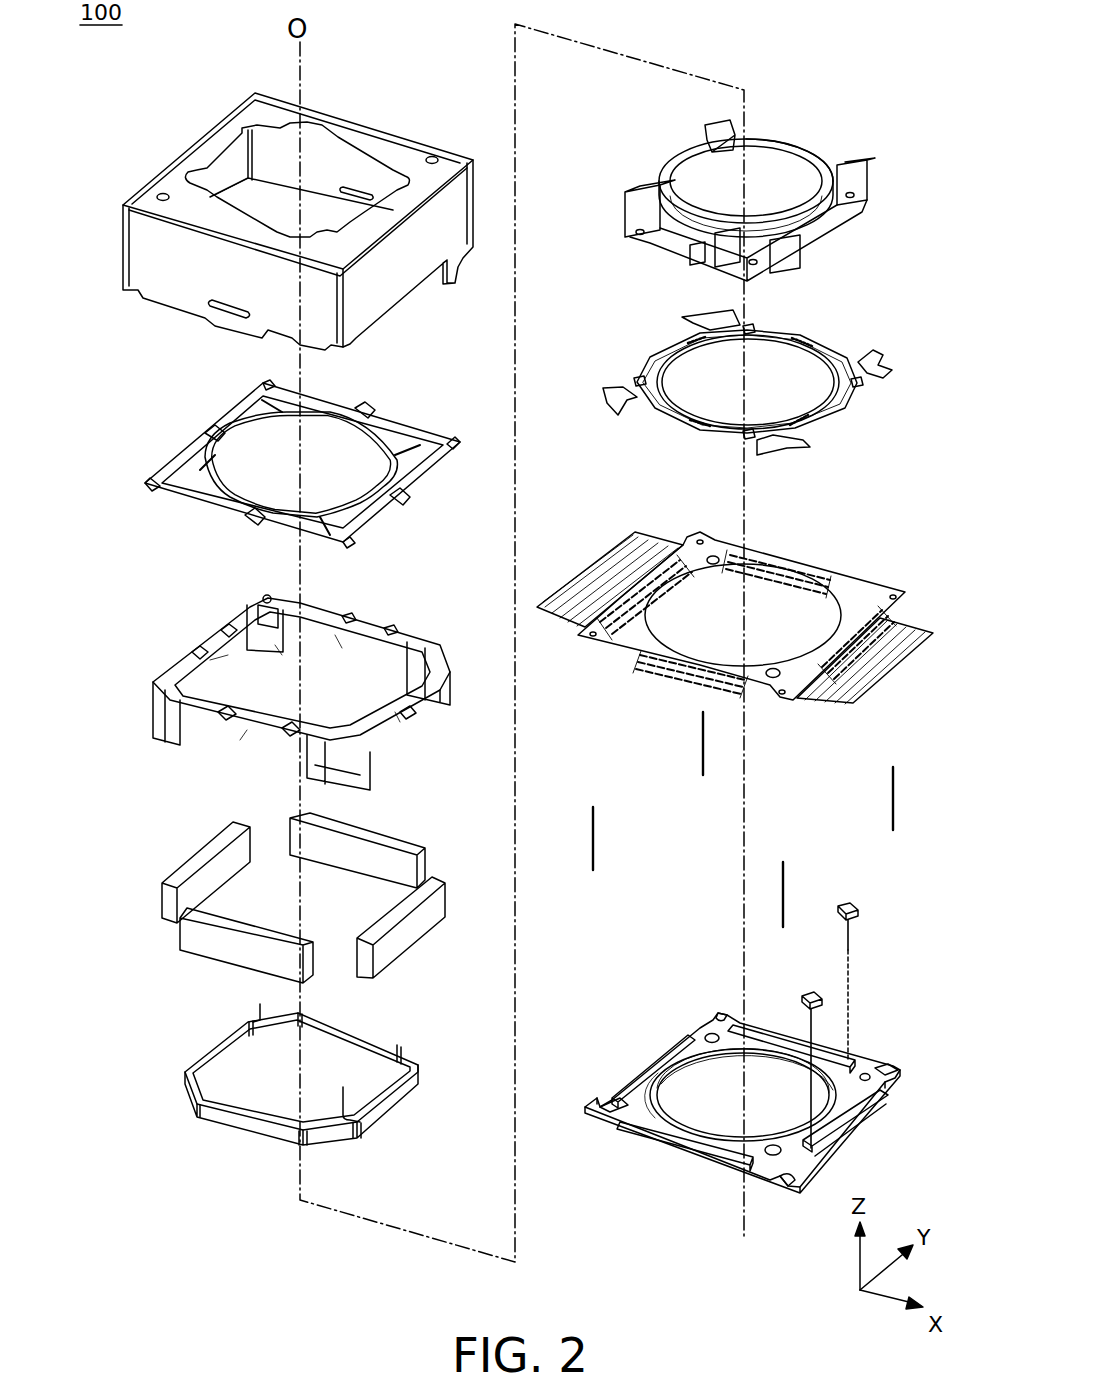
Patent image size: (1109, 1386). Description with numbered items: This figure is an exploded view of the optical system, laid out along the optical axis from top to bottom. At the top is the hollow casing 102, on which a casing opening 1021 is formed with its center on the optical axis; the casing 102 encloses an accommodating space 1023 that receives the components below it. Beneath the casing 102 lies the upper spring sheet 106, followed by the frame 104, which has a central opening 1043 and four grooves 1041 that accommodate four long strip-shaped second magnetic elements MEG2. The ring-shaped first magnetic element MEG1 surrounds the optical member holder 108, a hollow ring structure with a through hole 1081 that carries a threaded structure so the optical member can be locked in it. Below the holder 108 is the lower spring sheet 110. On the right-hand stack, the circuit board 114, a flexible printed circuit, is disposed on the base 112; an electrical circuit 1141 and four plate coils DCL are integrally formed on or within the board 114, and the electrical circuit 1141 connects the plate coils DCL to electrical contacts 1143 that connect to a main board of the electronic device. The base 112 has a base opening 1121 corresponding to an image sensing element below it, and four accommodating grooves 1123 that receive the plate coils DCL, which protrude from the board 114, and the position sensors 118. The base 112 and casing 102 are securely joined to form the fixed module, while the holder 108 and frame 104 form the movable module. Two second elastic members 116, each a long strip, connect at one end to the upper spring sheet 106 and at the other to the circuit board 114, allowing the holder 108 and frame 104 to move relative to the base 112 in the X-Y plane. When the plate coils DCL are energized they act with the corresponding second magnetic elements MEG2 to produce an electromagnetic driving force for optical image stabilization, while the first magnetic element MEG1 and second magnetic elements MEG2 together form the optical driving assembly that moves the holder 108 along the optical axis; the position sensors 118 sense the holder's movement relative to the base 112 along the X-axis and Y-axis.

The casing 102 is at (246, 112).
The casing opening 1021 is at (218, 150).
The accommodating space 1023 is at (345, 160).
The frame 104 is at (203, 636).
The grooves 1041 is at (225, 658).
The central opening 1043 is at (262, 605).
The upper spring sheet 106 is at (222, 412).
The optical member holder 108 is at (675, 158).
The through hole 1081 is at (803, 150).
The lower spring sheet 110 is at (672, 356).
The base 112 is at (870, 1060).
The base opening 1121 is at (712, 1082).
The accommodating grooves 1123 is at (637, 1078).
The circuit board 114 is at (700, 545).
The electrical circuit 1141 is at (718, 556).
The electrical contacts 1143 is at (630, 535).
The second elastic members 116 is at (703, 750).
The position sensor 118 is at (856, 905).
The plate coils DCL is at (640, 570).
The first magnetic element MEG1 is at (215, 1048).
The second magnetic elements MEG2 is at (258, 935).